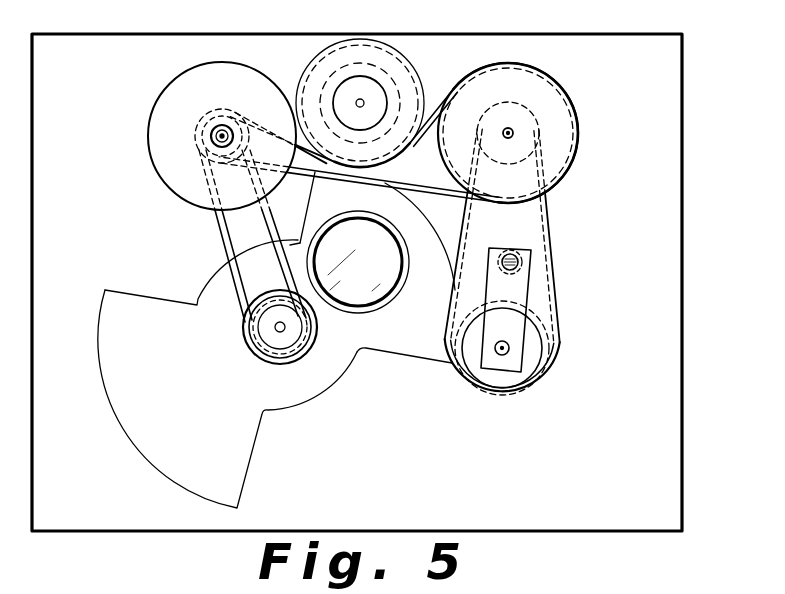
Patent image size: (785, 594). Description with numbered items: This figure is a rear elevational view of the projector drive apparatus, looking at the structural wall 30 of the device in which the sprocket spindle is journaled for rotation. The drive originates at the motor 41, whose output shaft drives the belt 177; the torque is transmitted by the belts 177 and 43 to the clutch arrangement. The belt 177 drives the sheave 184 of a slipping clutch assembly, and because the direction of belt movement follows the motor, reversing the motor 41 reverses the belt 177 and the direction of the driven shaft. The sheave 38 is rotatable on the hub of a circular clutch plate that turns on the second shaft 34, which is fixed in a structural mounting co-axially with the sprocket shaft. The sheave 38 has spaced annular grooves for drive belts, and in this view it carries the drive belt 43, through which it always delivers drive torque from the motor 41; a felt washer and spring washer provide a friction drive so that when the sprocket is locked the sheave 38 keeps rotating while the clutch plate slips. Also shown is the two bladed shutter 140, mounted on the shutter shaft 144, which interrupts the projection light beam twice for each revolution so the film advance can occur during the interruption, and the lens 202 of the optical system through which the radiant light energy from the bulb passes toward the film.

The structural wall 30 is at (677, 377).
The second shaft 34 is at (503, 356).
The sheave 38 is at (546, 385).
The motor 41 is at (172, 94).
The drive belt 43 is at (550, 209).
The two bladed shutter 140 is at (242, 454).
The shutter shaft 144 is at (283, 327).
The belt 177 is at (441, 106).
The sheave 184 is at (320, 72).
The lens 202 is at (378, 294).